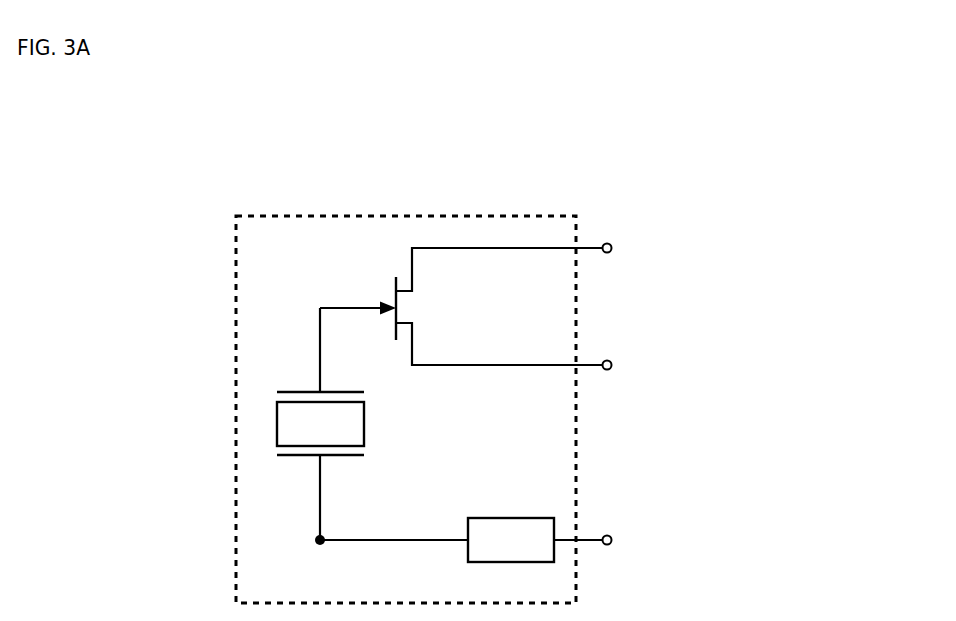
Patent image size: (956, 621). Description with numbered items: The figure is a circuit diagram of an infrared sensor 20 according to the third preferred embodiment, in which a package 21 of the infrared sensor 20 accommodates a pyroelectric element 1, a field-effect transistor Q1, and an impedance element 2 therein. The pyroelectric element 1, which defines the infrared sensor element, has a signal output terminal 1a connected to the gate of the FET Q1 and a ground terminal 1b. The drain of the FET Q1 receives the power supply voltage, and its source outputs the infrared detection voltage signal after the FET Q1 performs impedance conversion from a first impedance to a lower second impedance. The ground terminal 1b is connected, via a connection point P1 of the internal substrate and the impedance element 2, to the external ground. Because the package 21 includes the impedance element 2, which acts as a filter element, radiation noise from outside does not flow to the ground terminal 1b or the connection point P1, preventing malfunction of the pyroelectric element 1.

The infrared sensor 20 is at (391, 373).
The package 21 is at (258, 215).
The pyroelectric element 1 is at (335, 421).
The signal output terminal 1a is at (315, 391).
The ground terminal 1b is at (315, 457).
The impedance element 2 is at (512, 518).
The field-effect transistor Q1 is at (395, 283).
The connection point P1 is at (320, 547).